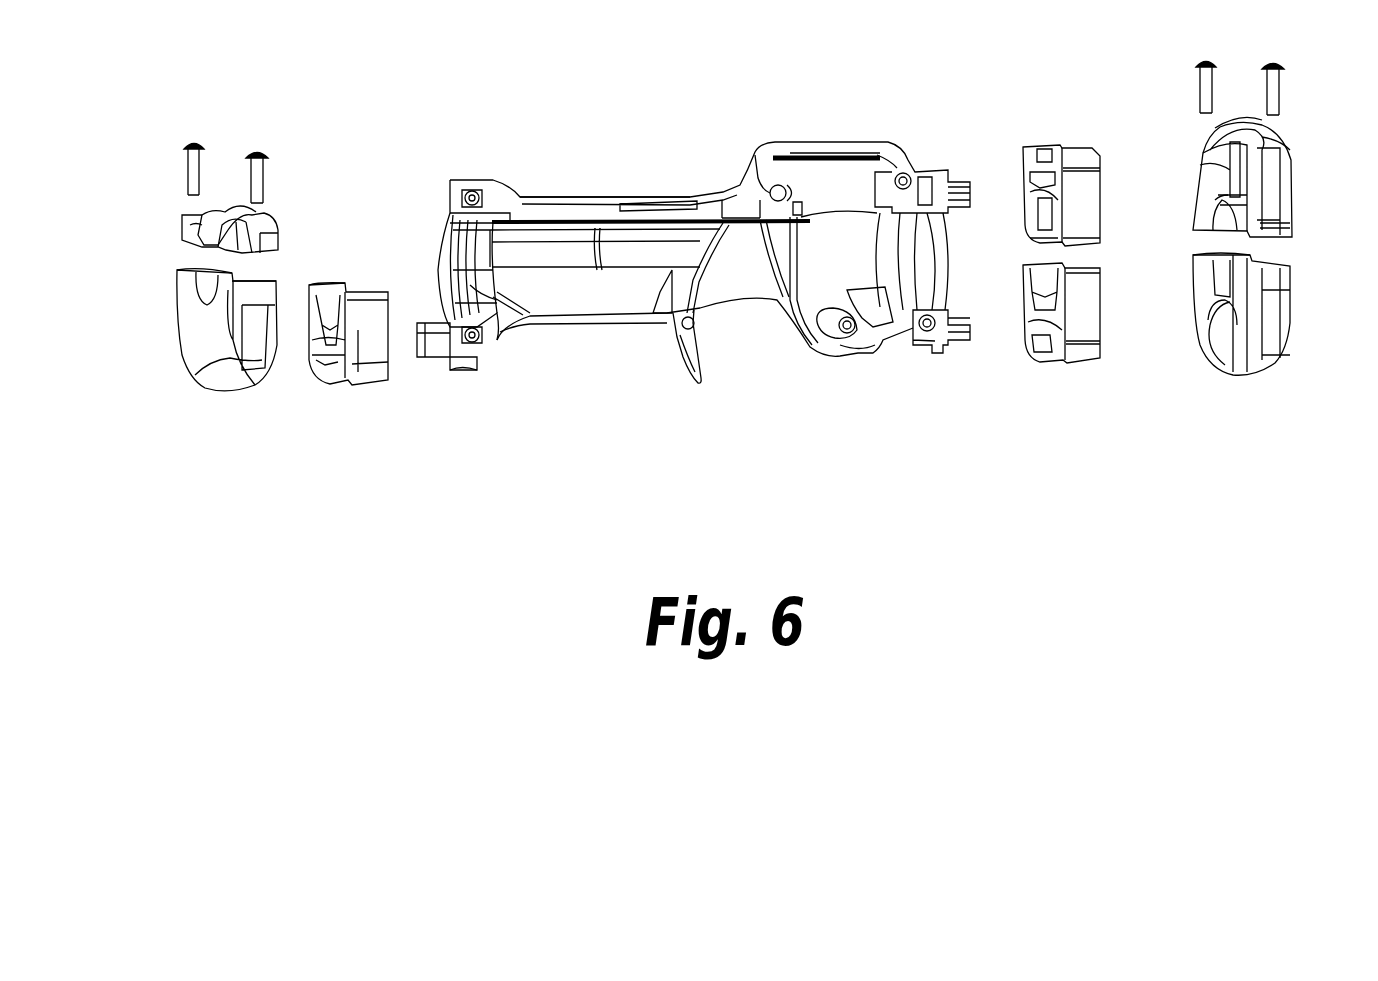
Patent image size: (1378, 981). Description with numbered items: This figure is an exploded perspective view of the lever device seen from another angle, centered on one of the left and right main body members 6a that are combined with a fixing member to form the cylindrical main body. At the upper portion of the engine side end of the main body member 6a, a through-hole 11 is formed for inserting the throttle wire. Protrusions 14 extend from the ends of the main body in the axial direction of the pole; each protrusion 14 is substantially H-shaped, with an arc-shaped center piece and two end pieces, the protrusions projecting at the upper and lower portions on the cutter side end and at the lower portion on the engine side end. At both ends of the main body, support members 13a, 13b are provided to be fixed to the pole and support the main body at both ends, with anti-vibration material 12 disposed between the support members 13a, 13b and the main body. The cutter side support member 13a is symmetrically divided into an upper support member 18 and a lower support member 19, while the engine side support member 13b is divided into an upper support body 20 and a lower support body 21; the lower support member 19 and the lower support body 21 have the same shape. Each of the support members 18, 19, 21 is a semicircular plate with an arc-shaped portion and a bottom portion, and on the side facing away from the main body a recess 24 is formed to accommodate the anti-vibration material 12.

The main body member 6a is at (677, 273).
The through-hole 11 is at (443, 213).
The anti-vibration material 12 is at (352, 387).
The support member 13a is at (1290, 140).
The support member 13b is at (163, 243).
The protrusion 14 is at (443, 357).
The upper support member 18 is at (1290, 172).
The lower support member 19 is at (1290, 303).
The upper support body 20 is at (243, 227).
The lower support body 21 is at (187, 360).
The recess 24 is at (1222, 162).